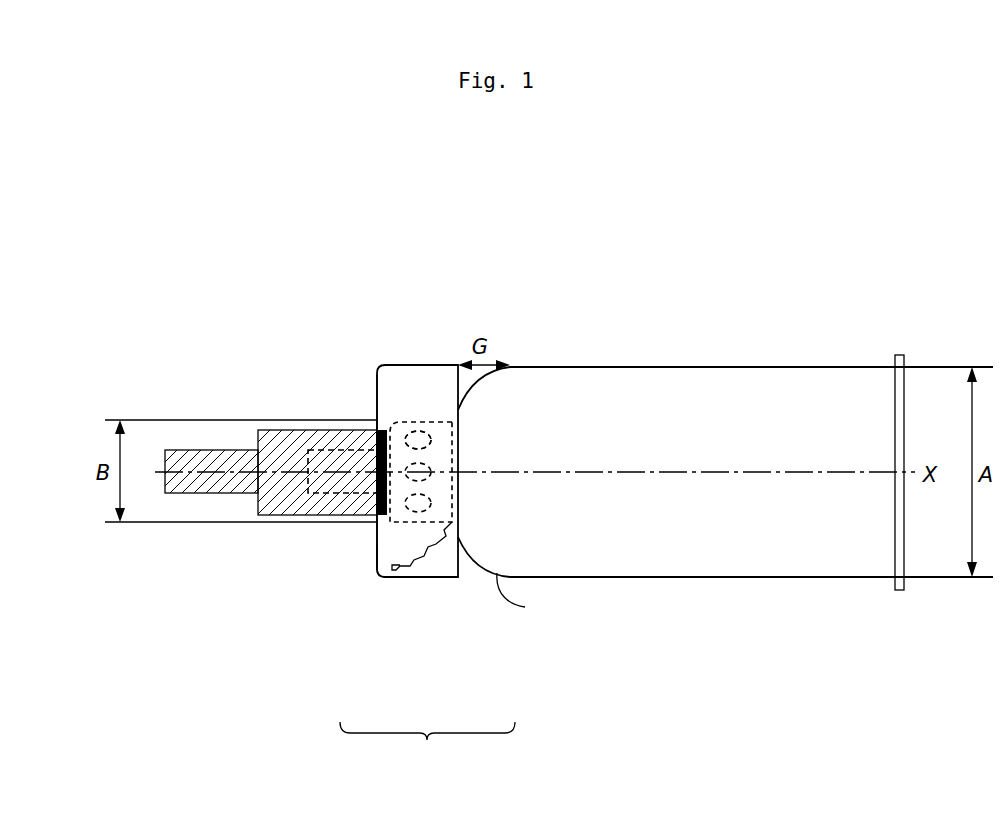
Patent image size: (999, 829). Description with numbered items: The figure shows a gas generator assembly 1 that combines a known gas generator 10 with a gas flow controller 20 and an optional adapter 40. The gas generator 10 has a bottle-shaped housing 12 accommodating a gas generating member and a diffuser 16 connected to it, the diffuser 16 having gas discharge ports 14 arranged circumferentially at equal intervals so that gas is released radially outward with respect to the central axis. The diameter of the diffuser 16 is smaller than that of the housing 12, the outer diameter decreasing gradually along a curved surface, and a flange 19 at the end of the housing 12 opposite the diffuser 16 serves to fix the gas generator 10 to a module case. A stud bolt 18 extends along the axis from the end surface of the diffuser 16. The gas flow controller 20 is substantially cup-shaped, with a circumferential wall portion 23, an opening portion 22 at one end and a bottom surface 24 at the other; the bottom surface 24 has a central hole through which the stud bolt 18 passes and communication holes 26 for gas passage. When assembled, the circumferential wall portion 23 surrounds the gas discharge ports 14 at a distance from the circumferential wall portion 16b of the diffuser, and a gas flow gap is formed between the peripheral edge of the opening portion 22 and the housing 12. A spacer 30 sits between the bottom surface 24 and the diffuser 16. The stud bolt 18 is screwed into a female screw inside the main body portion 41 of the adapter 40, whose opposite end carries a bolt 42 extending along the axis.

The gas generator assembly 1 is at (427, 747).
The gas generator 10 is at (725, 514).
The housing 12 is at (735, 367).
The gas discharge ports 14 is at (420, 432).
The diffuser 16 is at (405, 422).
The circumferential wall portion of the diffuser 16b is at (410, 420).
The stud bolt 18 is at (325, 462).
The flange 19 is at (900, 592).
The gas flow controller 20 is at (410, 487).
The opening portion 22 is at (458, 578).
The circumferential wall portion 23 is at (393, 365).
The bottom surface 24 is at (375, 558).
The communication holes 26 is at (377, 398).
The spacer 30 is at (378, 528).
The adapter 40 is at (271, 537).
The main body portion 41 is at (273, 440).
The bolt 42 is at (197, 458).